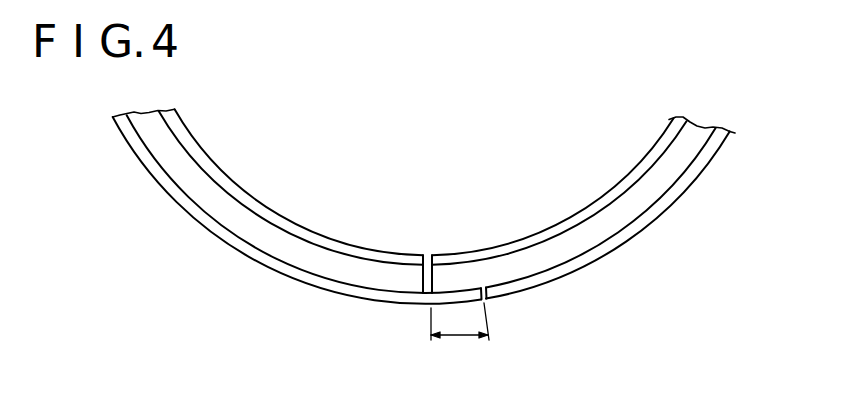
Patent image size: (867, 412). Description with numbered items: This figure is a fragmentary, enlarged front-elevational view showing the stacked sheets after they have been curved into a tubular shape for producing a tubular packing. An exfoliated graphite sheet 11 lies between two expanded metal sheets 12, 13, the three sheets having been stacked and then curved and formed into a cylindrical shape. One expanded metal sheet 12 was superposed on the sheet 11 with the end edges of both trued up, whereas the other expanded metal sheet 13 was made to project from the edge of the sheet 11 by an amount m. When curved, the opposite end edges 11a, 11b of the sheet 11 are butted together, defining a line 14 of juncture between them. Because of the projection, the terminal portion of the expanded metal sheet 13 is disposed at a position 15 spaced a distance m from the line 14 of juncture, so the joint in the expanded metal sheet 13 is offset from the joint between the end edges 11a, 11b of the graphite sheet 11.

The exfoliated graphite sheet 11 is at (411, 243).
The end edge of the sheet 11a is at (388, 234).
The end edge of the sheet 11b is at (493, 227).
The expanded metal sheet 12 is at (423, 186).
The expanded metal sheet 13 is at (408, 209).
The line of juncture 14 is at (441, 227).
The position 15 is at (547, 304).
The amount m is at (509, 340).